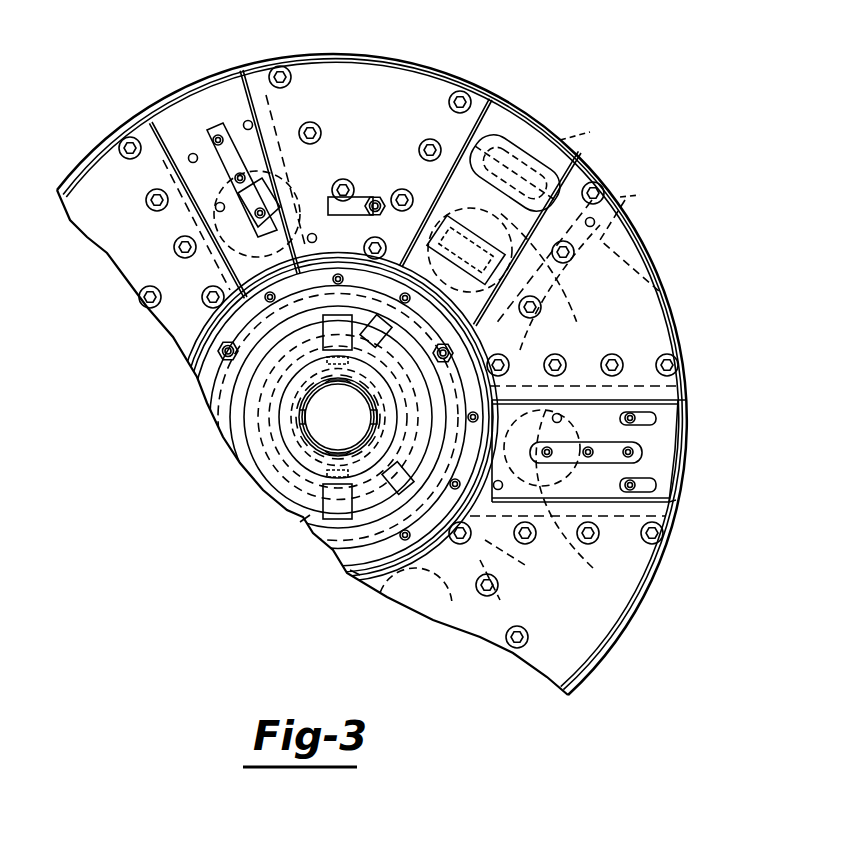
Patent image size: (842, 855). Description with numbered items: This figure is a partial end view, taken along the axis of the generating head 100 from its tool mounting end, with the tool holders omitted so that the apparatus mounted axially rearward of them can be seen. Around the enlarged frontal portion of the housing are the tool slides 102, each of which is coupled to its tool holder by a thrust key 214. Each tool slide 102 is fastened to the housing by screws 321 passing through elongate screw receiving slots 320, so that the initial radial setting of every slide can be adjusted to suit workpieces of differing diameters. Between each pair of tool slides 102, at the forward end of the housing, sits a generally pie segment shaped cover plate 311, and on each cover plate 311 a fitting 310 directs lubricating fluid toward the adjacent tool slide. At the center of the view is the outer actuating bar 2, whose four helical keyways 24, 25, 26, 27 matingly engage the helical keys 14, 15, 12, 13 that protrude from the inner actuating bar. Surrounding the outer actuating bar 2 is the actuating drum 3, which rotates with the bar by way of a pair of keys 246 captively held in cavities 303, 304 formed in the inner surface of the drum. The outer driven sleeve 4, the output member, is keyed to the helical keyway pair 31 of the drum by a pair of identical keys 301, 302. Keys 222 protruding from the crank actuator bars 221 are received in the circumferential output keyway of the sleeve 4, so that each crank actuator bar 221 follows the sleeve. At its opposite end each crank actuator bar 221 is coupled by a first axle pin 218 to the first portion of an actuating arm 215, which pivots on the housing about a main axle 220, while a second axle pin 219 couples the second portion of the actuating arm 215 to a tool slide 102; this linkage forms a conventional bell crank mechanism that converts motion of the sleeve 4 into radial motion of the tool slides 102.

The generating head 100 is at (411, 47).
The tool slide 102 is at (155, 118).
The cover plate 311 is at (313, 53).
The second axle pin 219 is at (436, 135).
The fitting 310 is at (357, 195).
The crank actuator bar 221 is at (300, 163).
The key 246 is at (379, 196).
The cavity 304 is at (414, 210).
The actuating arm 215 is at (562, 138).
The main axle 220 is at (640, 195).
The first axle pin 218 is at (490, 272).
The key 222 is at (503, 334).
The outer driven sleeve 4 is at (531, 353).
The screw 321 is at (634, 413).
The elongate screw receiving slot 320 is at (688, 372).
The thrust key 214 is at (215, 210).
The key 302 is at (288, 304).
The helical keyway 27 is at (372, 398).
The helical keyway 24 is at (327, 378).
The outer actuating bar 2 is at (428, 398).
The actuating drum 3 is at (343, 417).
The helical key 14 is at (338, 417).
The helical key 13 is at (364, 418).
The helical keyway 26 is at (339, 417).
The helical keyway 25 is at (292, 405).
The helical key 15 is at (310, 432).
The helical key 12 is at (314, 453).
The cavity 303 is at (307, 521).
The helical keyway pair 31 is at (350, 571).
The key 301 is at (385, 617).